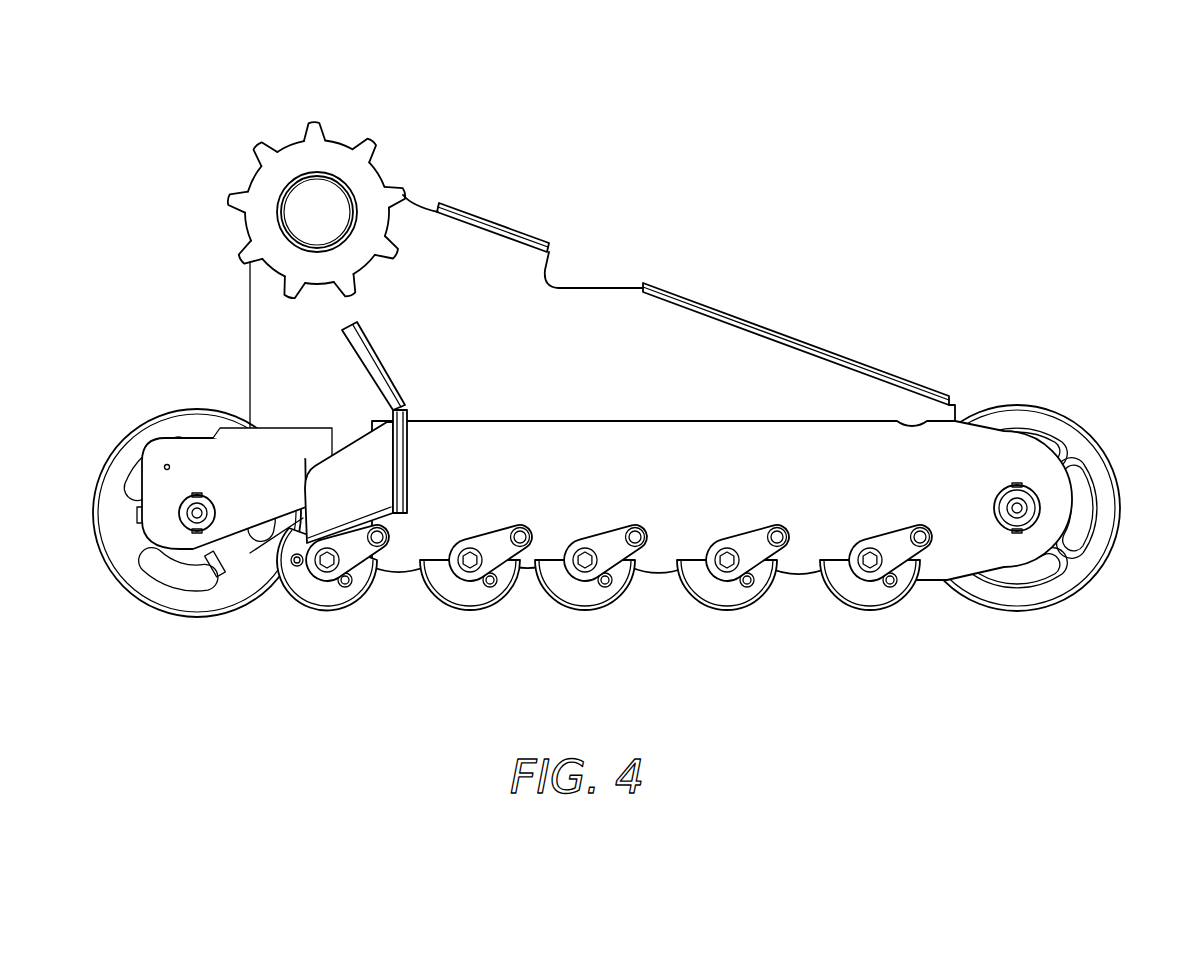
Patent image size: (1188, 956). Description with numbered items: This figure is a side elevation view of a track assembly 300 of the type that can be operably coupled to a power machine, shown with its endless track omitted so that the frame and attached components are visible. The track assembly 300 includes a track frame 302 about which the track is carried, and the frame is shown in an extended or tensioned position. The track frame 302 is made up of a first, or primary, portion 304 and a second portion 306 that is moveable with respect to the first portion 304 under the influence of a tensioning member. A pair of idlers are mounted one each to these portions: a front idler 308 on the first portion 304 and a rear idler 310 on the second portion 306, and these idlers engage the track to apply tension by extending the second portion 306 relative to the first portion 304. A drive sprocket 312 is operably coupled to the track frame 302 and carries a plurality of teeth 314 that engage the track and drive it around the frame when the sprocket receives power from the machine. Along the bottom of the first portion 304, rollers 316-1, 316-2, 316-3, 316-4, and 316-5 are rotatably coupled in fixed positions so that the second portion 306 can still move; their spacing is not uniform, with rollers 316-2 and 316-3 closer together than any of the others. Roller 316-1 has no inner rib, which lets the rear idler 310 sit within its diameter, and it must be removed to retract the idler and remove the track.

The track assembly 300 is at (809, 218).
The track frame 302 is at (670, 292).
The first portion 304 is at (797, 360).
The second portion 306 is at (262, 467).
The front idler 308 is at (1055, 412).
The rear idler 310 is at (170, 413).
The drive sprocket 312 is at (293, 140).
The teeth 314 is at (323, 122).
The roller 316-1 is at (330, 600).
The roller 316-2 is at (473, 600).
The roller 316-3 is at (588, 600).
The roller 316-4 is at (730, 600).
The roller 316-5 is at (875, 600).